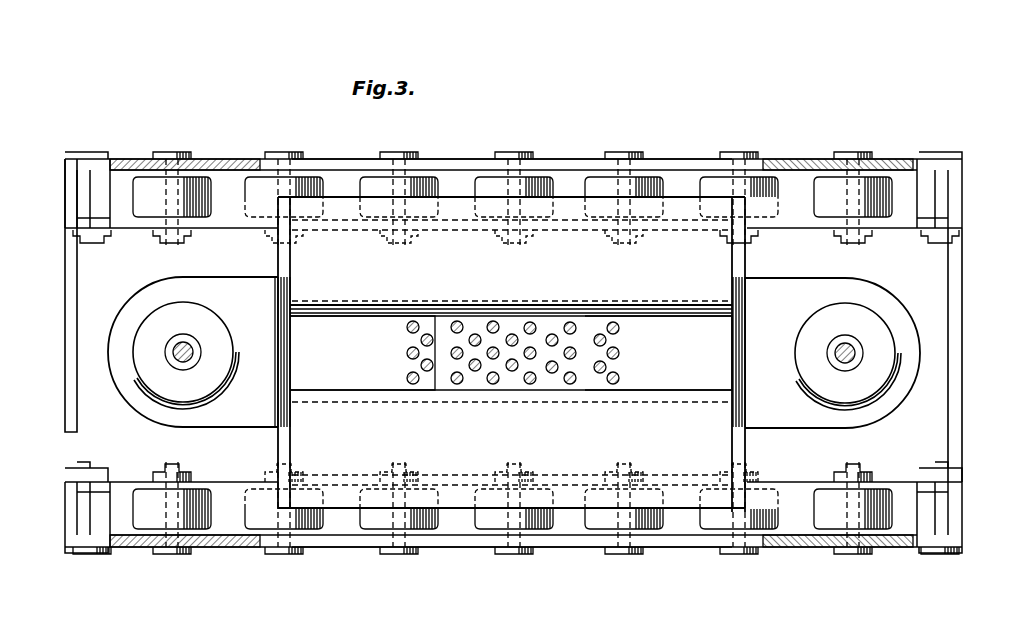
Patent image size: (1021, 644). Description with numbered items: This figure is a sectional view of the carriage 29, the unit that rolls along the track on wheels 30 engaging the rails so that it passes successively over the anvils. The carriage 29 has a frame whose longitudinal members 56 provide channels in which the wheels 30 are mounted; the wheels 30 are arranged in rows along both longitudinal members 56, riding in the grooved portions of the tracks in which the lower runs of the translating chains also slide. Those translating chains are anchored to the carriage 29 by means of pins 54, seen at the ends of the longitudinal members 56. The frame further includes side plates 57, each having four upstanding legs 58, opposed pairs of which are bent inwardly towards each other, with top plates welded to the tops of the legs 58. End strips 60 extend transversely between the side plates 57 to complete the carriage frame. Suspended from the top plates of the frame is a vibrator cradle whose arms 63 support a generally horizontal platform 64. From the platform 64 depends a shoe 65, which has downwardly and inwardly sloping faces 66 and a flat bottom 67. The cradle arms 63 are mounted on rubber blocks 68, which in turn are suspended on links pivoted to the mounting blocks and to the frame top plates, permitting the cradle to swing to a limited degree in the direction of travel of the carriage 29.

The carriage 29 is at (470, 548).
The wheels 30 is at (823, 180).
The pins 54 is at (80, 198).
The longitudinal members 56 is at (232, 229).
The side plates 57 is at (572, 158).
The upstanding legs 58 is at (218, 158).
The end strips 60 is at (67, 292).
The arms 63 is at (908, 422).
The platform 64 is at (576, 284).
The shoe 65 is at (664, 364).
The sloping faces 66 is at (336, 364).
The flat bottom 67 is at (512, 337).
The rubber blocks 68 is at (223, 336).